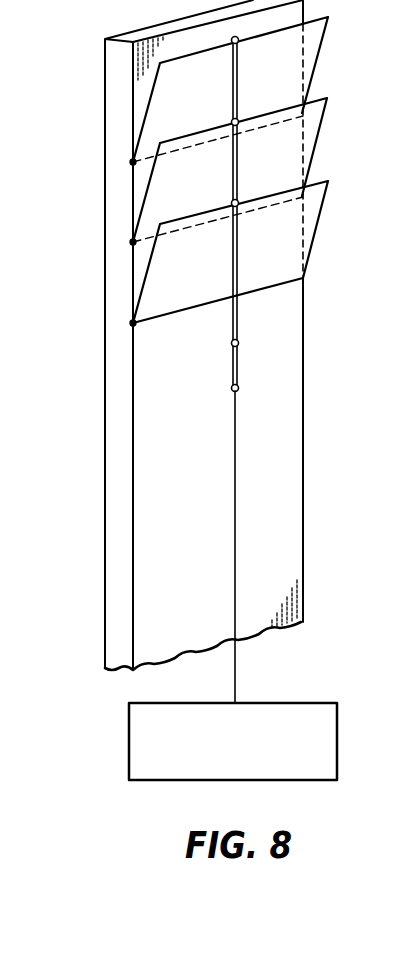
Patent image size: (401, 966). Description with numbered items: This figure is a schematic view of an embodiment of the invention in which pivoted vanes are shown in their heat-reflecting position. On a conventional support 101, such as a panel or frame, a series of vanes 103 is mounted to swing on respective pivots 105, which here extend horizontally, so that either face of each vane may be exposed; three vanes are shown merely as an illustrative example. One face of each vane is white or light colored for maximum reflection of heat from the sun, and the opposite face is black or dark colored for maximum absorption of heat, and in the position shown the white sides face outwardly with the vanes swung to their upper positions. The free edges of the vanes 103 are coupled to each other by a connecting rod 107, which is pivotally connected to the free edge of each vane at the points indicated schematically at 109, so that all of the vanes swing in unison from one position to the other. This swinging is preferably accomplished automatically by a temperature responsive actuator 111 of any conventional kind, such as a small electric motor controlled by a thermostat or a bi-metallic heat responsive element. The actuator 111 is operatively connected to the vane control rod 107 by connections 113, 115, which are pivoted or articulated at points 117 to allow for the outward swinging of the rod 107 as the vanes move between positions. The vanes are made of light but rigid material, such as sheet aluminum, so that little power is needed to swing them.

The support 101 is at (115, 390).
The vanes 103 is at (325, 32).
The pivots 105 is at (133, 162).
The connecting rod 107 is at (232, 181).
The pivotal connection 109 is at (232, 121).
The temperature responsive actuator 111 is at (305, 703).
The connection 113 is at (237, 494).
The connection 115 is at (239, 363).
The articulated points 117 is at (232, 345).